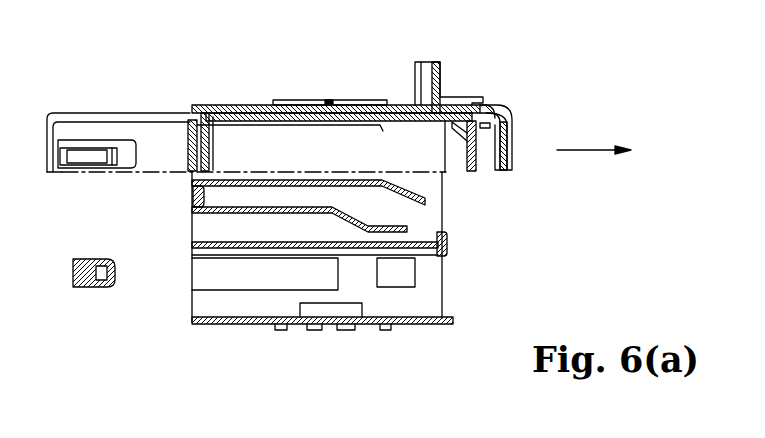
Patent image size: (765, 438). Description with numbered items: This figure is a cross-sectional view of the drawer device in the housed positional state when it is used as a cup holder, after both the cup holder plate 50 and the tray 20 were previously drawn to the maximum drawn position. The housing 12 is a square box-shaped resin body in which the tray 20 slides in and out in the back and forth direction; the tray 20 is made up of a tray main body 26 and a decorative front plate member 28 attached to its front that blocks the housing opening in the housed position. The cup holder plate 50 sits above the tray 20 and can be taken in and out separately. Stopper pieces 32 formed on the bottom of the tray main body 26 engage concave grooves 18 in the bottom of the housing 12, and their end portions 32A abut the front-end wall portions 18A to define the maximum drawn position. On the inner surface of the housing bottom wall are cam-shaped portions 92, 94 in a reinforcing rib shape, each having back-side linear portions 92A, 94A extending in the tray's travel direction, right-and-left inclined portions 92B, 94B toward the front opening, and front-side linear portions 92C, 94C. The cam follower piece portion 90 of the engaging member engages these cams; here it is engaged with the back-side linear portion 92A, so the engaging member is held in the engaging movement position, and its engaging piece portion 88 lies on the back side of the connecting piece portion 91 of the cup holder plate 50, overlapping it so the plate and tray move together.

The housing 12 is at (423, 318).
The concave grooves 18 is at (250, 278).
The front-end wall portions 18A is at (338, 270).
The tray 20 is at (507, 108).
The tray main body 26 is at (446, 112).
The decorative front plate member 28 is at (503, 131).
The stopper pieces 32 is at (86, 153).
The end portions 32A is at (116, 270).
The cup holder plate 50 is at (289, 112).
The engaging piece portion 88 is at (191, 128).
The cam follower piece portion 90 is at (193, 192).
The connecting piece portion 91 is at (210, 129).
The cam-shaped portion 92 is at (338, 177).
The back-side linear portion 92A is at (245, 177).
The right-and-left inclined portion 92B is at (405, 191).
The front-side linear portion 92C is at (427, 203).
The cam-shaped portion 94 is at (288, 213).
The back-side linear portion 94A is at (230, 213).
The right-and-left inclined portion 94B is at (338, 216).
The front-side linear portion 94C is at (393, 234).